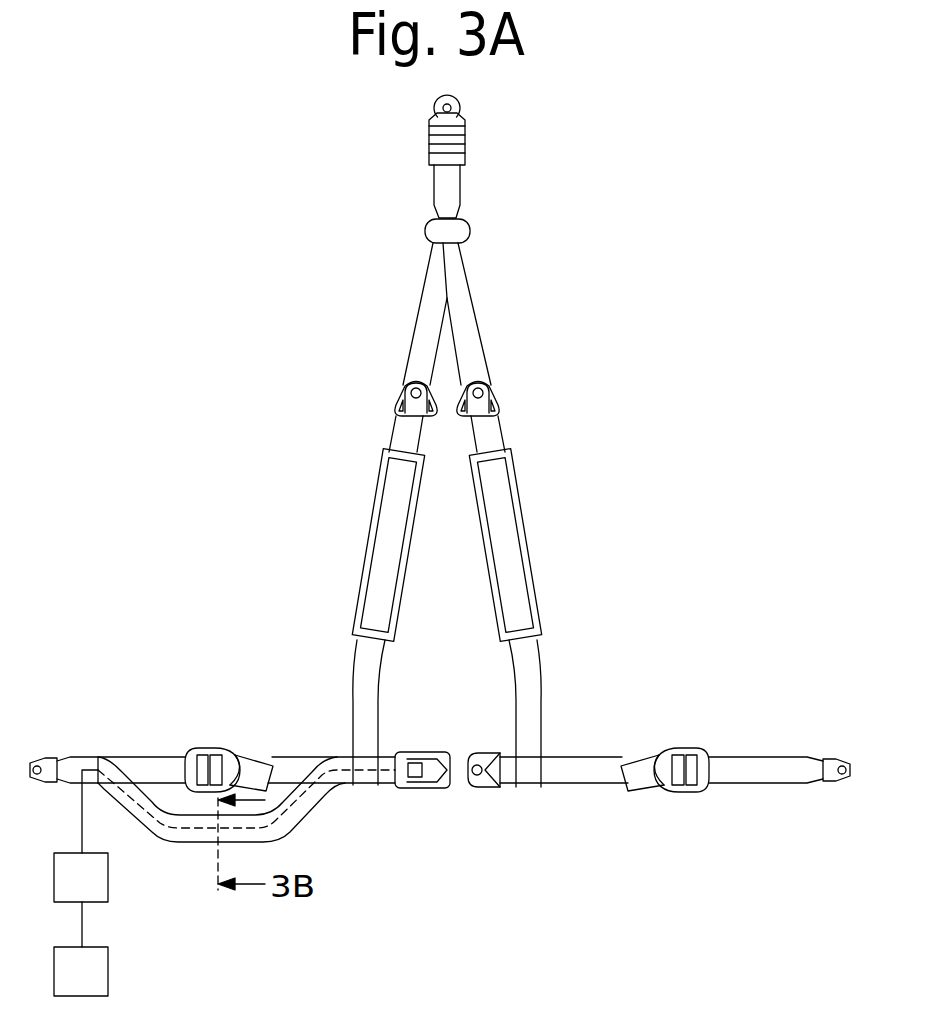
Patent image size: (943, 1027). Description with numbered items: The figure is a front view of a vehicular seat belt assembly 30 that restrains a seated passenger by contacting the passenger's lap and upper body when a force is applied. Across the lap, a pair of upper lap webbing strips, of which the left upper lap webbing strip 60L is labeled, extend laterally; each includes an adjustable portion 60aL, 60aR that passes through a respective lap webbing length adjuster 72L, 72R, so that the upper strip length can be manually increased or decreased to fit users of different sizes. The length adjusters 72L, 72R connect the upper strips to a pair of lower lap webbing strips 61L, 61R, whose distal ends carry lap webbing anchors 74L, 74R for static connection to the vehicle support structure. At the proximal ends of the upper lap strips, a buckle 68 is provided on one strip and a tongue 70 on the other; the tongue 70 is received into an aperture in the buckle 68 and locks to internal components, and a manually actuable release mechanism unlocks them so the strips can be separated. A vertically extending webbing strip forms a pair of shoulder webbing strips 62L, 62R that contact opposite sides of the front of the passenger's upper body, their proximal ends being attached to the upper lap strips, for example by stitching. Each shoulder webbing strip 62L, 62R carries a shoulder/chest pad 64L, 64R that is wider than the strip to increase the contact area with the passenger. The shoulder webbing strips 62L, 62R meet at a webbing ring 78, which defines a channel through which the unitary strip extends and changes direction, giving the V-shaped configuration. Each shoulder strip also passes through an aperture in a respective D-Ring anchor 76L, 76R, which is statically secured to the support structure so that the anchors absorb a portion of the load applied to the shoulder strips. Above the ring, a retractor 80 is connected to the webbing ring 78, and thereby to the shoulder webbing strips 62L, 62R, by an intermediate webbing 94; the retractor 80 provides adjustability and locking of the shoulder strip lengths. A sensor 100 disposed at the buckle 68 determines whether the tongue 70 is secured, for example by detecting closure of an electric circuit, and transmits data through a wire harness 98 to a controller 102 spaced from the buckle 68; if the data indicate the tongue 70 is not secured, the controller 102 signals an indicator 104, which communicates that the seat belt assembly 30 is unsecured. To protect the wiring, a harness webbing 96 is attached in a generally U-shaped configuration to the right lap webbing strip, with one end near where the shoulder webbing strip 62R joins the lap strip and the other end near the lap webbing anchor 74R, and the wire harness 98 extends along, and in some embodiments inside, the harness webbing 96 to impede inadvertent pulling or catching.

The vehicular seat belt assembly 30 is at (298, 270).
The retractor 80 is at (462, 137).
The intermediate webbing 94 is at (457, 186).
The webbing ring 78 is at (462, 231).
The D-Ring anchor 76R is at (397, 403).
The D-Ring anchor 76L is at (497, 403).
The shoulder/chest pad 64R is at (376, 538).
The shoulder/chest pad 64L is at (518, 538).
The shoulder webbing strip 62R is at (356, 686).
The shoulder webbing strip 62L is at (538, 686).
The lap webbing anchor 74R is at (42, 757).
The lap webbing anchor 74L is at (838, 759).
The lower lap webbing strip 61R is at (140, 766).
The lower lap webbing strip 61L is at (755, 766).
The lap webbing length adjuster 72R is at (201, 750).
The lap webbing length adjuster 72L is at (686, 750).
The adjustable portion 60aR is at (250, 763).
The adjustable portion 60aL is at (640, 763).
The upper lap webbing strip 60L is at (596, 766).
The sensor 100 is at (414, 762).
The buckle 68 is at (423, 789).
The tongue 70 is at (483, 788).
The wire harness 98 is at (82, 825).
The harness webbing 96 is at (190, 836).
The controller 102 is at (108, 883).
The indicator 104 is at (108, 969).